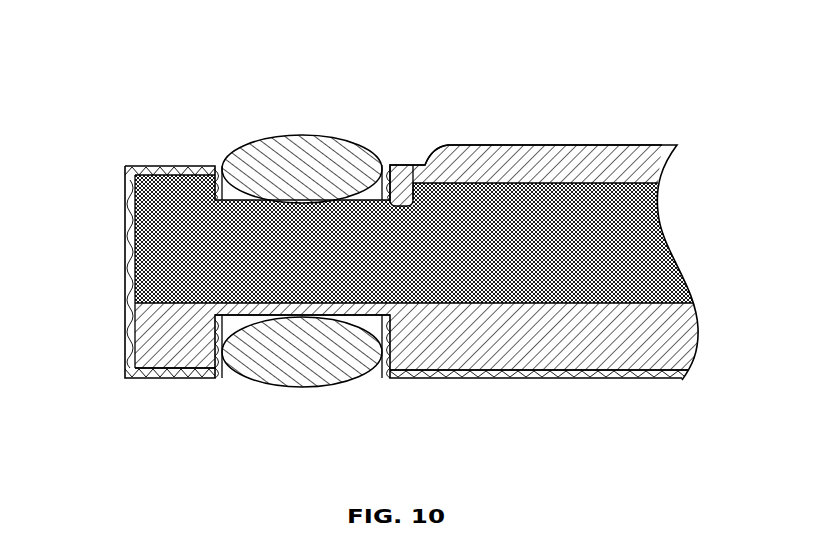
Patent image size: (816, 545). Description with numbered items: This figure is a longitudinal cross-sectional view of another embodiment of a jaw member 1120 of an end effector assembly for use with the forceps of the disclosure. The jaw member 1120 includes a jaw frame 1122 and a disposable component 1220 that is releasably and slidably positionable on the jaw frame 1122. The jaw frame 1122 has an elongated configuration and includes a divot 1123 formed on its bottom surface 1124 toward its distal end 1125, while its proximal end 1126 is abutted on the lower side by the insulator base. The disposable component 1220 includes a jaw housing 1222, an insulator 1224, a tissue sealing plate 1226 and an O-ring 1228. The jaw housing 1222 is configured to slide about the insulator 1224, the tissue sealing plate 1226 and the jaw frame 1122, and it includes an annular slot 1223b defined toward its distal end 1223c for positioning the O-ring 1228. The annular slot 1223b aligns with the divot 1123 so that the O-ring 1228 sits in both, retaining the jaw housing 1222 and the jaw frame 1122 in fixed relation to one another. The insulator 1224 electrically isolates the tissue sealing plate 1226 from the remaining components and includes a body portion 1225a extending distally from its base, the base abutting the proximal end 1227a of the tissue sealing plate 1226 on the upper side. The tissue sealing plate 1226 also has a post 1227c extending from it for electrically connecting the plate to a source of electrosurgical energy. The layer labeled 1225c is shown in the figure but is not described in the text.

The jaw member 1120 is at (538, 54).
The O-ring 1228 is at (303, 150).
The post 1227c is at (412, 197).
The tissue sealing plate 1226 is at (561, 157).
The proximal end of tissue sealing plate 1227a is at (638, 157).
The upper insulating layer 1225c is at (137, 188).
The insulator 1224 is at (146, 247).
The distal end of jaw housing 1223c is at (125, 297).
The body portion 1225a is at (655, 232).
The distal end of jaw frame 1125 is at (145, 350).
The proximal end of jaw frame 1126 is at (683, 347).
The jaw frame 1122 is at (168, 355).
The jaw housing 1222 is at (167, 374).
The annular slot 1223b is at (228, 380).
The divot 1123 is at (376, 380).
The bottom surface 1124 is at (447, 380).
The disposable component 1220 is at (607, 380).